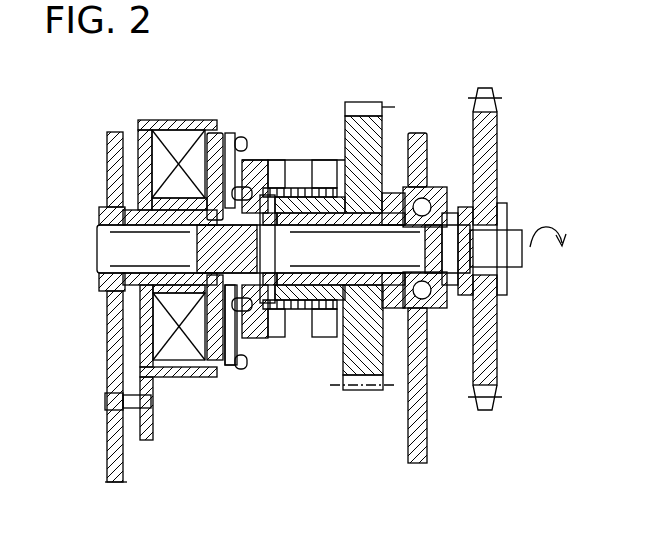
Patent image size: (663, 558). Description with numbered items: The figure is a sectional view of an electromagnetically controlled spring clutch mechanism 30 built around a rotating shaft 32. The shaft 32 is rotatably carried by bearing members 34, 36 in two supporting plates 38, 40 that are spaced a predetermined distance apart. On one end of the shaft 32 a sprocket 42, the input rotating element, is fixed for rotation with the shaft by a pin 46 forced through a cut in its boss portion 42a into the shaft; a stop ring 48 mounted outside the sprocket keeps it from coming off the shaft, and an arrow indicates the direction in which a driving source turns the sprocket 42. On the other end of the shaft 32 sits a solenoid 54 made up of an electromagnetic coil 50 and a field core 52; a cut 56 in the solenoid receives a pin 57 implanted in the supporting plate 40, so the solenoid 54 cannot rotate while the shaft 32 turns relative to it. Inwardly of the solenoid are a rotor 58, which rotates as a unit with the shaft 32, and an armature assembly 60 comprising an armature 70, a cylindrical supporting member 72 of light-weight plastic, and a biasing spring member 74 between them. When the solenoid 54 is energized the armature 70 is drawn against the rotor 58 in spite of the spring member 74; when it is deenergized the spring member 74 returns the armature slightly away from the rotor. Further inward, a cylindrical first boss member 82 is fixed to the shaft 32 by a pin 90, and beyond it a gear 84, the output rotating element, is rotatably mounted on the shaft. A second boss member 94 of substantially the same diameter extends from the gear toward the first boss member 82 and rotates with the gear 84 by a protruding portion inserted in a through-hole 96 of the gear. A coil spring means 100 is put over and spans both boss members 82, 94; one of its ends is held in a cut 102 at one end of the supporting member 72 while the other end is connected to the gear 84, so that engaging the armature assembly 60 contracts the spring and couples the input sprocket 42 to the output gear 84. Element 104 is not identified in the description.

The spring clutch mechanism 30 is at (304, 72).
The rotating shaft 32 is at (100, 230).
The bearing member 34 is at (440, 308).
The bearing member 36 is at (103, 290).
The supporting plate 38 is at (427, 432).
The supporting plate 40 is at (124, 462).
The sprocket 42 is at (493, 140).
The boss portion 42a is at (478, 293).
The pin 46 is at (505, 215).
The stop ring 48 is at (507, 220).
The electromagnetic coil 50 is at (182, 125).
The field core 52 is at (145, 122).
The solenoid 54 is at (190, 377).
The cut 56 is at (150, 435).
The pin 57 is at (105, 420).
The rotor 58 is at (215, 130).
The armature assembly 60 is at (255, 127).
The armature 70 is at (230, 370).
The supporting member 72 is at (262, 338).
The biasing spring member 74 is at (245, 345).
The first boss member 82 is at (276, 162).
The gear 84 is at (372, 378).
The pin 90 is at (300, 309).
The second boss member 94 is at (312, 310).
The through-hole 96 is at (395, 308).
The coil spring means 100 is at (327, 165).
The cut 102 is at (258, 160).
The cup 104 is at (333, 118).